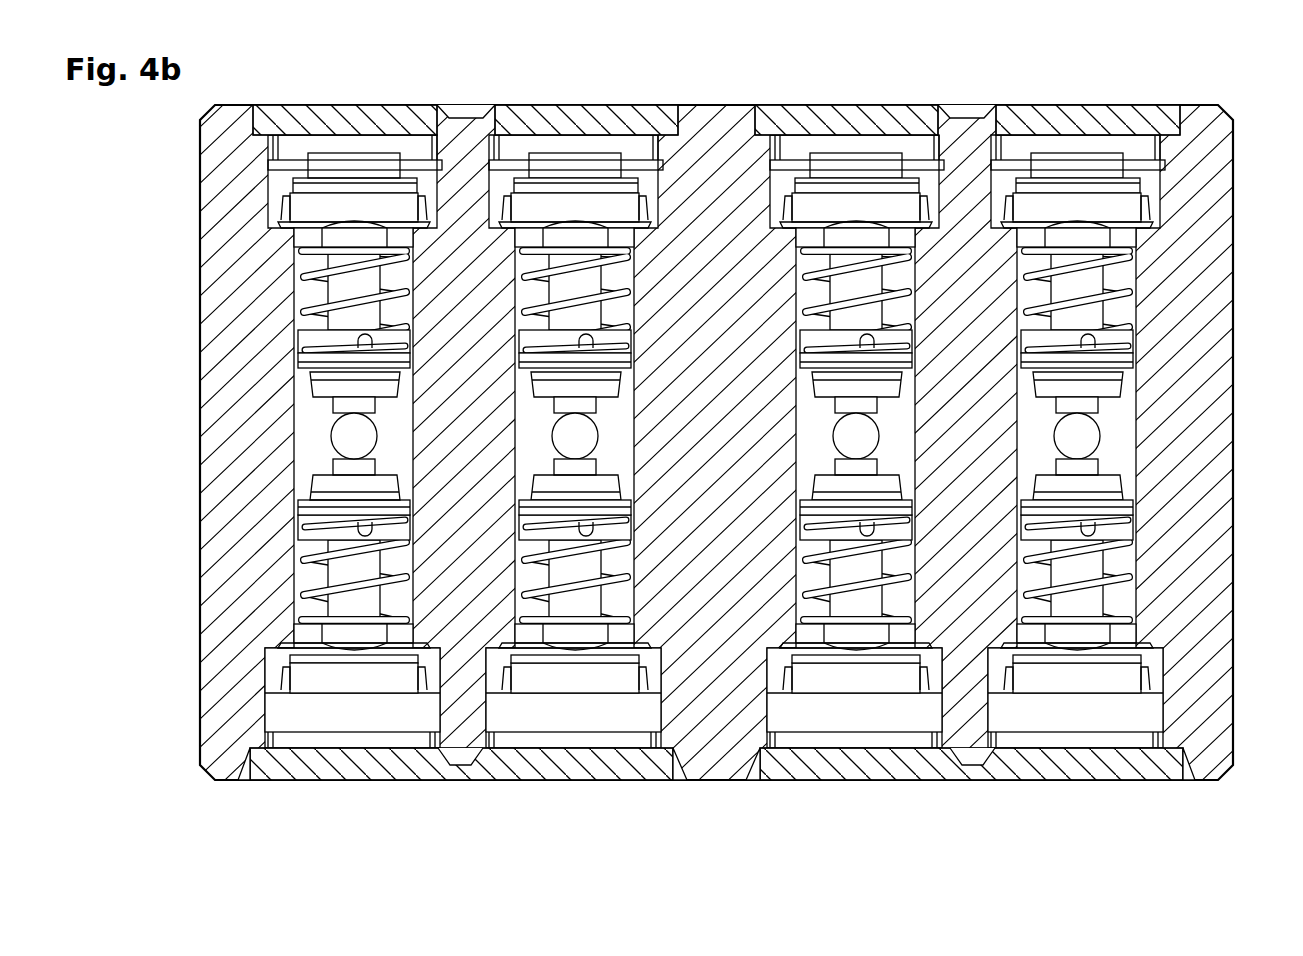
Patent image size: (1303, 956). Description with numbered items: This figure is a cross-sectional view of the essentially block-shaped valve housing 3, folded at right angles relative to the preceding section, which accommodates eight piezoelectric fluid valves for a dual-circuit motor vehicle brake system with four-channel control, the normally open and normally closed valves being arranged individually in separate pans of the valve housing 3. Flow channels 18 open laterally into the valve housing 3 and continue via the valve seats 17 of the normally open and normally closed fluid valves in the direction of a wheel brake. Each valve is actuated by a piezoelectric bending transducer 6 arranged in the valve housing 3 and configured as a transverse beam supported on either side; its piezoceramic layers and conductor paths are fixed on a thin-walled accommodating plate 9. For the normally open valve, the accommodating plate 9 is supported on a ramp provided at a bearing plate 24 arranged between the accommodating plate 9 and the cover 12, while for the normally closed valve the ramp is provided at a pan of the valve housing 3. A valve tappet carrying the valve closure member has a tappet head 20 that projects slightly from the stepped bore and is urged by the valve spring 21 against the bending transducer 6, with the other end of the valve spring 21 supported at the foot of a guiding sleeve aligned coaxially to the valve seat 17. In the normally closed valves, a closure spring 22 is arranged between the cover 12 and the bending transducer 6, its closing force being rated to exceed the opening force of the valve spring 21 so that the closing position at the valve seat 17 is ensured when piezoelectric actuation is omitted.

The valve housing 3 is at (1205, 246).
The piezoelectric bending transducer 6 is at (1047, 660).
The accommodating plate 9 is at (1098, 680).
The cover 12 is at (760, 768).
The valve seat 17 is at (318, 490).
The flow channel 18 is at (1100, 436).
The tappet head 20 is at (300, 632).
The valve spring 21 is at (300, 566).
The closure spring 22 is at (1140, 165).
The bearing plate 24 is at (1140, 722).